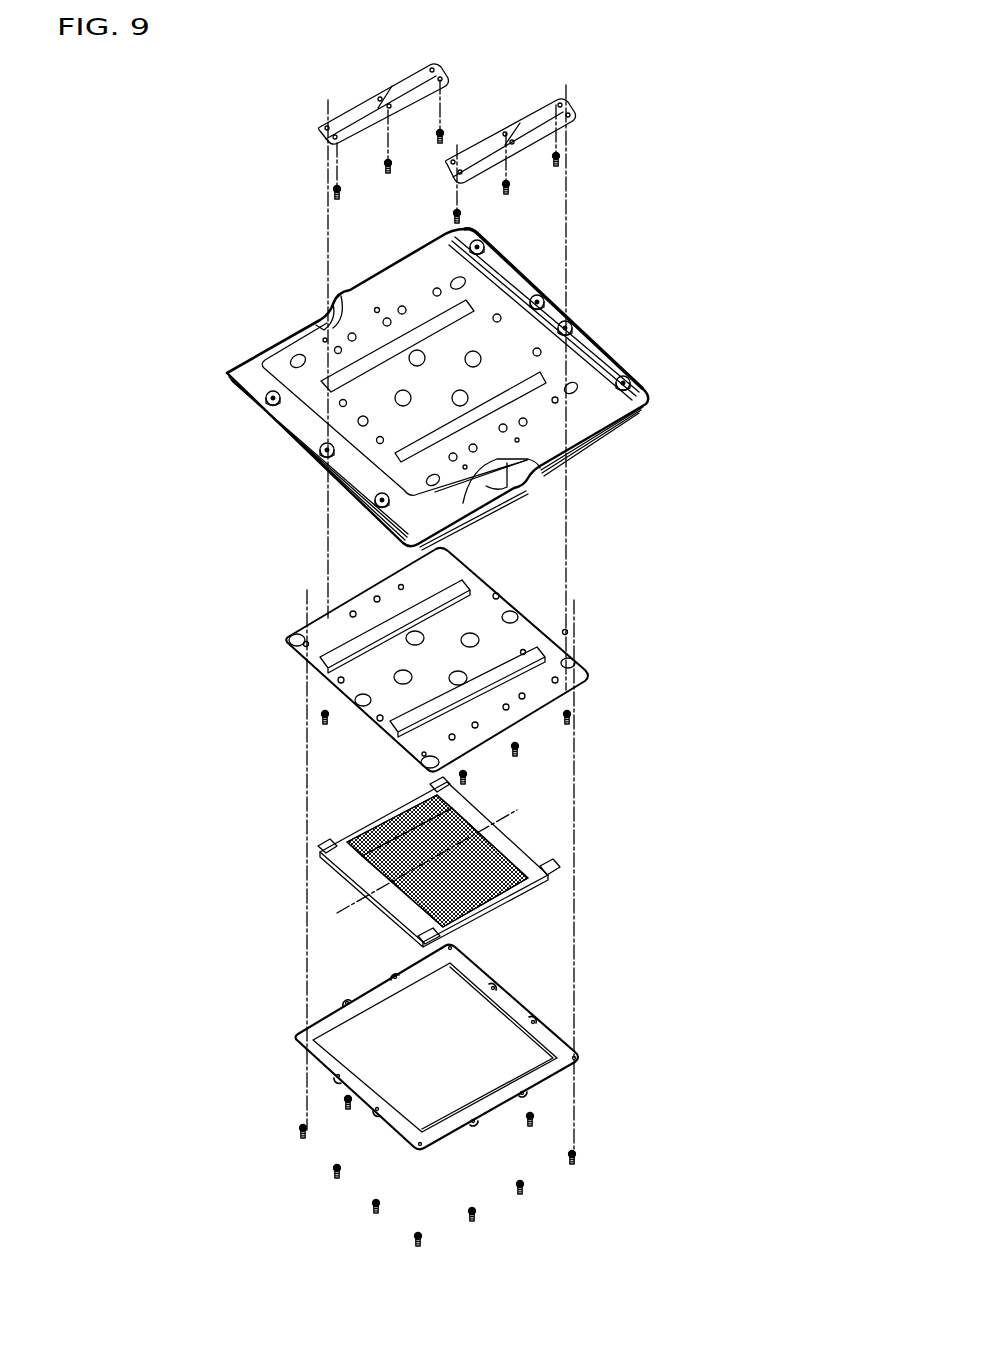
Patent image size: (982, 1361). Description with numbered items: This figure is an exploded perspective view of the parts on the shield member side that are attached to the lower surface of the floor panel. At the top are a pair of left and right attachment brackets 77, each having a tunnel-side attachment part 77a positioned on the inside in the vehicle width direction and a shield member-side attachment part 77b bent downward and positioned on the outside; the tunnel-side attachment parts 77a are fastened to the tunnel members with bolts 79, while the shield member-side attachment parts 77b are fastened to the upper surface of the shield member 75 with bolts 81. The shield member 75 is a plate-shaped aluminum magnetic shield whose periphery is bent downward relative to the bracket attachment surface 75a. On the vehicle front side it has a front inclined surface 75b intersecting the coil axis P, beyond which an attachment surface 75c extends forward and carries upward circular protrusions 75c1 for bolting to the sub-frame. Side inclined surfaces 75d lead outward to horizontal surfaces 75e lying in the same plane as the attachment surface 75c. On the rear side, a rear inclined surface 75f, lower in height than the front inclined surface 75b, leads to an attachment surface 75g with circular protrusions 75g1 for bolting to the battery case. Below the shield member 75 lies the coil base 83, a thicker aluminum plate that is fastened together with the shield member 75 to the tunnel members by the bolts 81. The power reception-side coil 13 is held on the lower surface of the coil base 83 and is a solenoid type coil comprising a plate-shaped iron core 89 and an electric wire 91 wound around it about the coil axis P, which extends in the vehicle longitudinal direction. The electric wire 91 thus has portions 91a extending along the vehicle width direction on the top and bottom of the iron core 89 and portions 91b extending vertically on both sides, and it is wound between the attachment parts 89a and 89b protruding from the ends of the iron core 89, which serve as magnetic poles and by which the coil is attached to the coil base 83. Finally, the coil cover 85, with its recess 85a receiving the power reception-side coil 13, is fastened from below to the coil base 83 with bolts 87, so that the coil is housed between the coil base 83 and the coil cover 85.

The power reception-side coil 13 is at (543, 844).
The shield member 75 is at (600, 343).
The bracket attachment surface 75a is at (405, 270).
The front inclined surface 75b is at (302, 405).
The attachment surface 75c is at (300, 428).
The circular protrusions 75c1 is at (262, 402).
The side inclined surfaces 75d is at (312, 330).
The horizontal surfaces 75e is at (272, 343).
The rear inclined surface 75f is at (508, 296).
The attachment surface 75g is at (616, 374).
The circular protrusions 75g1 is at (572, 326).
The attachment brackets 77 is at (503, 50).
The tunnel-side attachment part 77a is at (400, 98).
The shield member-side attachment part 77b is at (340, 120).
The bolts 79 is at (332, 196).
The bolts 81 is at (320, 722).
The coil base 83 is at (596, 678).
The coil cover 85 is at (303, 1051).
The recess 85a is at (350, 1040).
The bolts 87 is at (348, 1110).
The iron core 89 is at (333, 864).
The attachment part 89a is at (325, 848).
The attachment part 89b is at (430, 790).
The electric wire 91 is at (512, 900).
The portions extending along the vehicle width direction 91a is at (342, 840).
The portions extending along the vehicle vertical direction 91b is at (378, 824).
The coil axis P is at (417, 871).